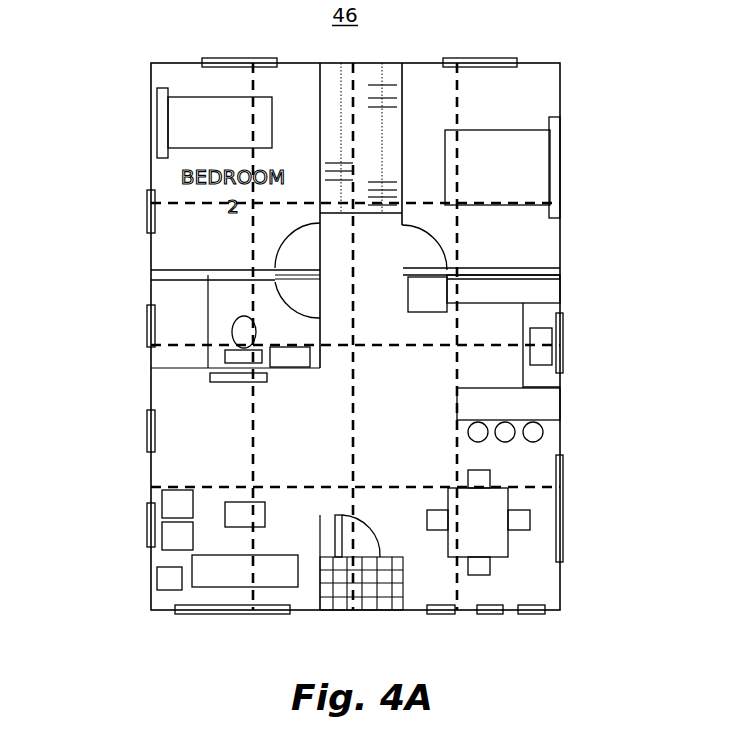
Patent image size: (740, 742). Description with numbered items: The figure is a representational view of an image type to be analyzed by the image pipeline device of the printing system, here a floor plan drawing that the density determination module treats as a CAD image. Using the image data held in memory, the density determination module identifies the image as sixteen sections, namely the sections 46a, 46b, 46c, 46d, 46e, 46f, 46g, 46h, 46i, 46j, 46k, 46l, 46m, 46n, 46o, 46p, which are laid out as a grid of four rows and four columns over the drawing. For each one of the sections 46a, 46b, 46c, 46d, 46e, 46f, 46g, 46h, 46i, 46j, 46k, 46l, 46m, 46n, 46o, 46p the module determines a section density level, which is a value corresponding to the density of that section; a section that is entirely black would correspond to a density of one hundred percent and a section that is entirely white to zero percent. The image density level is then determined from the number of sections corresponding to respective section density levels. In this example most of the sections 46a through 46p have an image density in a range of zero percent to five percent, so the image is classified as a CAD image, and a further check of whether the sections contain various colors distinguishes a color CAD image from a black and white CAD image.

The section 46a is at (163, 78).
The section 46b is at (163, 223).
The section 46c is at (163, 357).
The section 46d is at (163, 497).
The section 46e is at (297, 140).
The section 46f is at (288, 295).
The section 46g is at (283, 418).
The section 46h is at (280, 574).
The section 46i is at (445, 100).
The section 46j is at (445, 232).
The section 46k is at (437, 388).
The section 46l is at (434, 541).
The section 46m is at (540, 156).
The section 46n is at (533, 283).
The section 46o is at (552, 438).
The section 46p is at (533, 588).